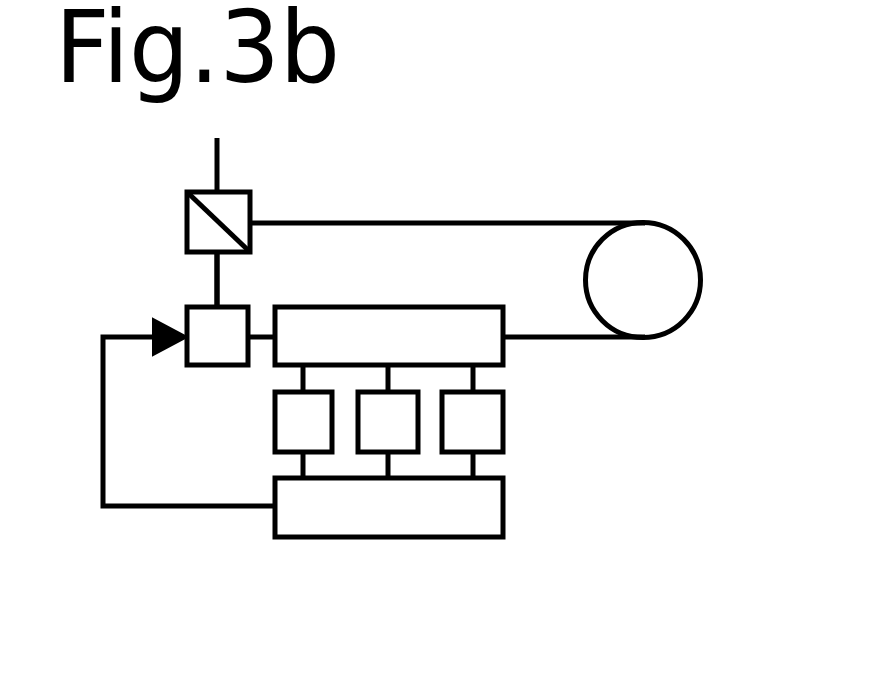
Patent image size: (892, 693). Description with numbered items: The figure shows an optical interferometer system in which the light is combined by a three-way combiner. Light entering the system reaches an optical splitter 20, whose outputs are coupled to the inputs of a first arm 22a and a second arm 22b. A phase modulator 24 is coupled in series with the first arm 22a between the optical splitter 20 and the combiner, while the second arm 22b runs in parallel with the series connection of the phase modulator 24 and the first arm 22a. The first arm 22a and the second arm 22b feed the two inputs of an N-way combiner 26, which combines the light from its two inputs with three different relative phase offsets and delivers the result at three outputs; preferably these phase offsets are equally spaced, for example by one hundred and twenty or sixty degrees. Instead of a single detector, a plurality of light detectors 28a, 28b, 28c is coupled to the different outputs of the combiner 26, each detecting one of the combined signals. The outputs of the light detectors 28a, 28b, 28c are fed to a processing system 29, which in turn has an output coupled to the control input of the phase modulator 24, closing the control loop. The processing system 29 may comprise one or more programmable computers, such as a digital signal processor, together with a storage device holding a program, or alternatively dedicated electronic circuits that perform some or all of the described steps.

The optical splitter 20 is at (187, 227).
The first arm 22a is at (217, 285).
The second arm 22b is at (702, 276).
The phase modulator 24 is at (204, 367).
The N-way combiner 26 is at (357, 307).
The light detector 28a is at (275, 440).
The light detector 28b is at (402, 453).
The light detector 28c is at (505, 418).
The processing system 29 is at (505, 501).